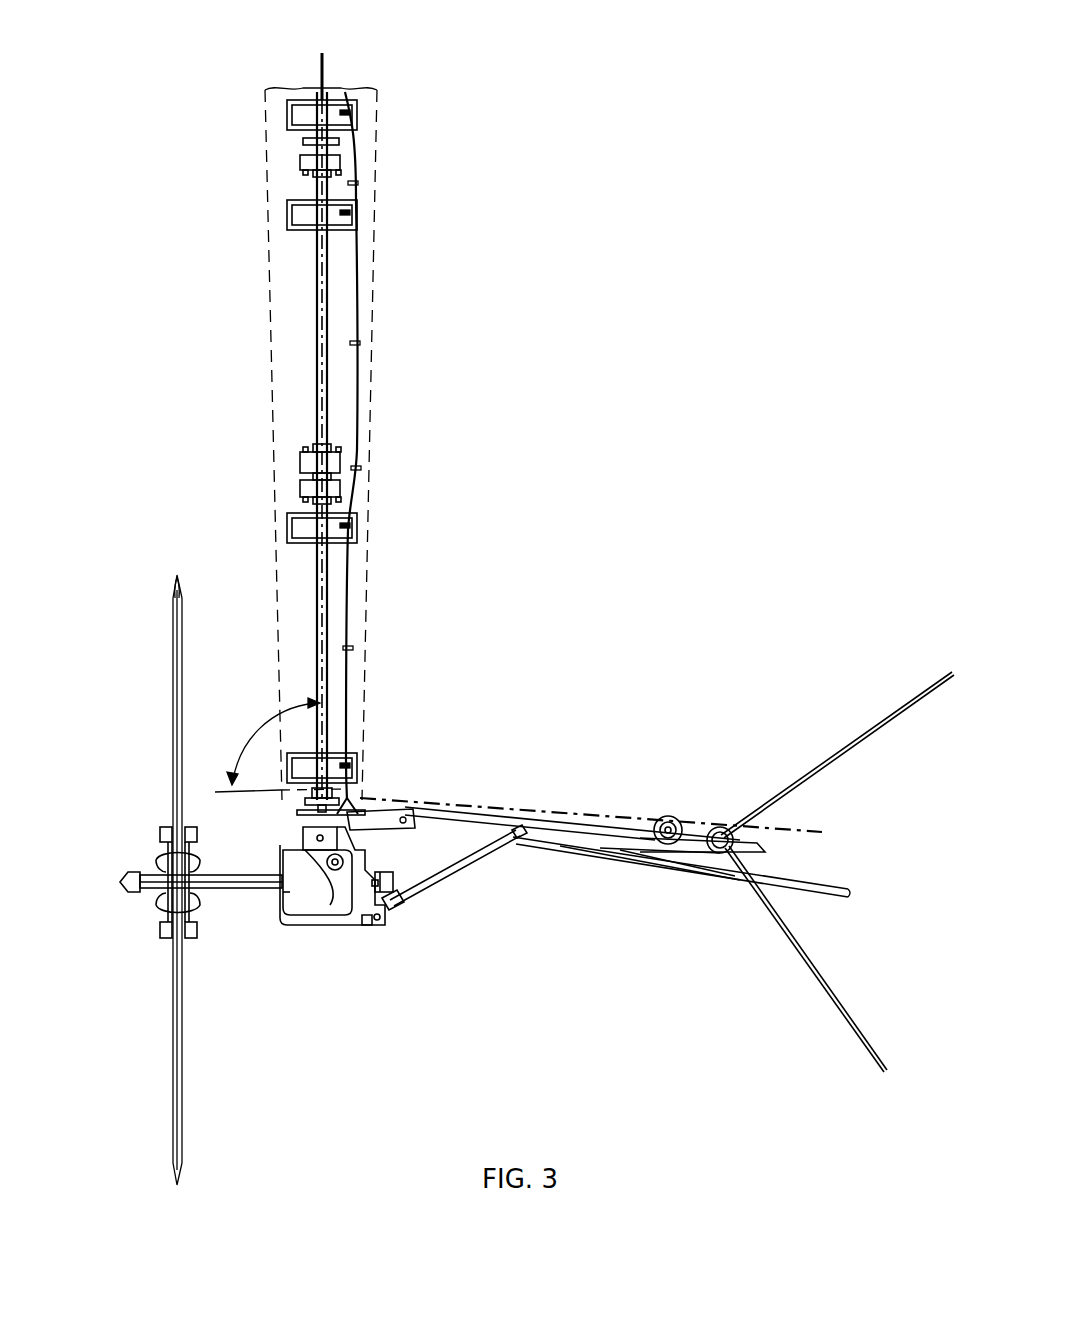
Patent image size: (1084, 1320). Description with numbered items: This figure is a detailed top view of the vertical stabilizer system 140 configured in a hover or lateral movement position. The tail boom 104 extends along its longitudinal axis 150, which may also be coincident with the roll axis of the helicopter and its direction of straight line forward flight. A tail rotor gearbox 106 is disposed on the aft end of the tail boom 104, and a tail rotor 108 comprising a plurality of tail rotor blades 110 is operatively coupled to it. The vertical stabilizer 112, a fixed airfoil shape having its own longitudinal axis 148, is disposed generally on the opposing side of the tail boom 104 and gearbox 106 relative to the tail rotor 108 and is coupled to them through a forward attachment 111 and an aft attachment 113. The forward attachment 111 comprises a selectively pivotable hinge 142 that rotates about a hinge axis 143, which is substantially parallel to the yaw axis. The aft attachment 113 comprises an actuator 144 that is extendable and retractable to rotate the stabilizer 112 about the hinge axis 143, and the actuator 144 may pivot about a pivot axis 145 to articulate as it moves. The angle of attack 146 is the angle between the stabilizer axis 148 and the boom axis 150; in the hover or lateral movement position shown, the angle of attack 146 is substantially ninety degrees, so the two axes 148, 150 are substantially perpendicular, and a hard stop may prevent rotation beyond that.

The tail boom 104 is at (270, 370).
The tail rotor gearbox 106 is at (292, 898).
The tail rotor 108 is at (128, 918).
The tail rotor blades 110 is at (173, 712).
The forward attachment 111 is at (422, 850).
The vertical stabilizer 112 is at (590, 810).
The aft attachment 113 is at (408, 985).
The vertical stabilizer system 140 is at (657, 808).
The hinge 142 is at (440, 808).
The hinge axis 143 is at (406, 808).
The actuator 144 is at (400, 912).
The pivot axis 145 is at (378, 928).
The angle of attack 146 is at (277, 733).
The longitudinal axis 148 is at (790, 828).
The longitudinal axis 150 is at (322, 74).